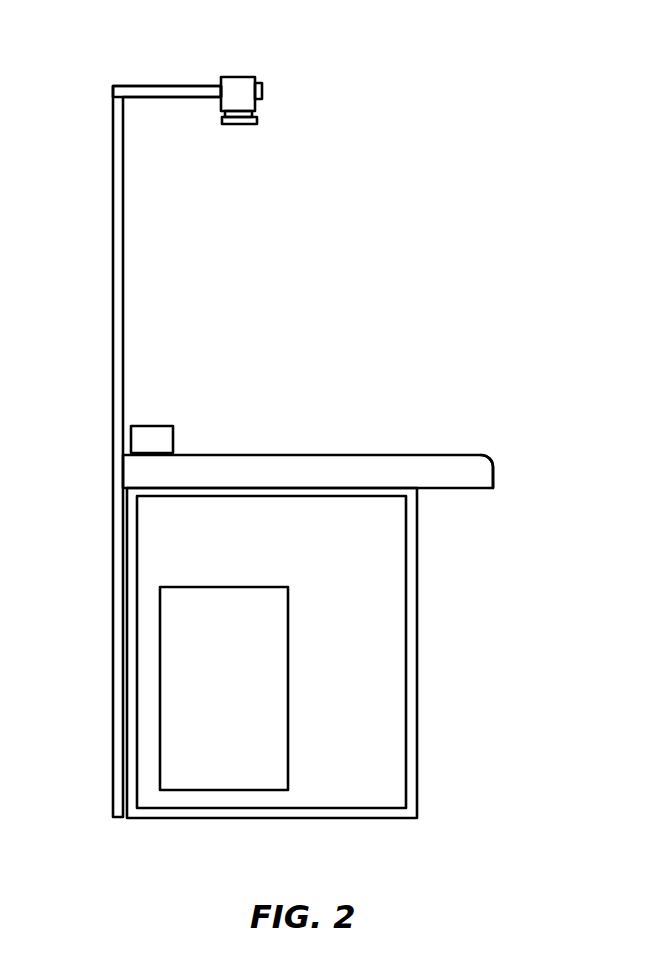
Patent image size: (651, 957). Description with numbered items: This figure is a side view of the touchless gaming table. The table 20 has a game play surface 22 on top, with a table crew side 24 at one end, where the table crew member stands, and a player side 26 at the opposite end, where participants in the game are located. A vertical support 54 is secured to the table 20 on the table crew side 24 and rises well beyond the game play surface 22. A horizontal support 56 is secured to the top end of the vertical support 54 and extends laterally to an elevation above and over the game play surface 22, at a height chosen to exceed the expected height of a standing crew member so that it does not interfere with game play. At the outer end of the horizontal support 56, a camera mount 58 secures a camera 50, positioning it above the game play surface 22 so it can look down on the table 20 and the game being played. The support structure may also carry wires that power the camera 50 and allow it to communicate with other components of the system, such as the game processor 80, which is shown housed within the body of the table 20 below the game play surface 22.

The table 20 is at (448, 358).
The game play surface 22 is at (292, 453).
The table crew side 24 is at (125, 470).
The player side 26 is at (493, 475).
The camera 50 is at (258, 118).
The vertical support 54 is at (117, 255).
The horizontal support 56 is at (155, 87).
The camera mount 58 is at (222, 90).
The game processor 80 is at (205, 668).